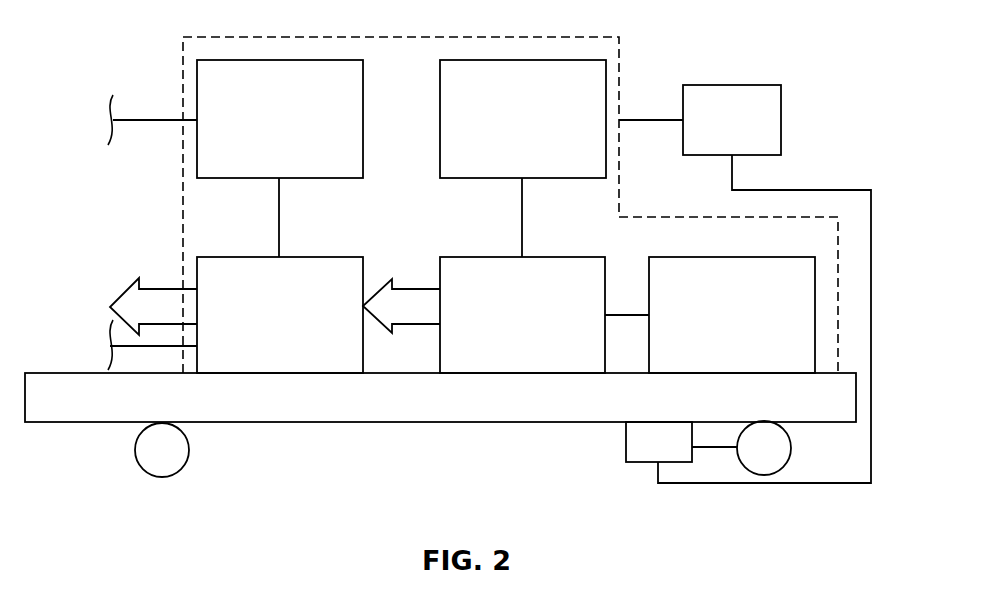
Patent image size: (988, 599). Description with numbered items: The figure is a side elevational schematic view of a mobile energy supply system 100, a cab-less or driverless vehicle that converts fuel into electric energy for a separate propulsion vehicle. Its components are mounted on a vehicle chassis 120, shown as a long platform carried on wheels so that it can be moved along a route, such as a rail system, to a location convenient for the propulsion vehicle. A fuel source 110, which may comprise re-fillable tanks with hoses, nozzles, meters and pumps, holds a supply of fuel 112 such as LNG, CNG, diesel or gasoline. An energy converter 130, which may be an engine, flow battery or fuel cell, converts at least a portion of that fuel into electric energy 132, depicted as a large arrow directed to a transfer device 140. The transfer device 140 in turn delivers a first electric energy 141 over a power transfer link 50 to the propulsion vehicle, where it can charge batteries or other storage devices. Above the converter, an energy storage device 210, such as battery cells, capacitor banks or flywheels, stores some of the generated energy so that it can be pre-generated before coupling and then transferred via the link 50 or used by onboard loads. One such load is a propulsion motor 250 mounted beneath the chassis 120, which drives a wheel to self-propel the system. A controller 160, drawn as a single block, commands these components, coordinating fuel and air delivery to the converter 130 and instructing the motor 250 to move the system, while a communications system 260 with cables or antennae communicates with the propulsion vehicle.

The power transfer link 50 is at (125, 119).
The mobile energy supply system 100 is at (495, 447).
The fuel source 110 is at (759, 332).
The supply of fuel 112 is at (783, 312).
The vehicle chassis 120 is at (345, 410).
The energy converter 130 is at (550, 332).
The electric energy 132 is at (415, 288).
The transfer device 140 is at (307, 332).
The first electric energy 141 is at (163, 288).
The controller 160 is at (759, 136).
The energy storage device 210 is at (307, 136).
The propulsion motor 250 is at (686, 459).
The communications system 260 is at (550, 136).